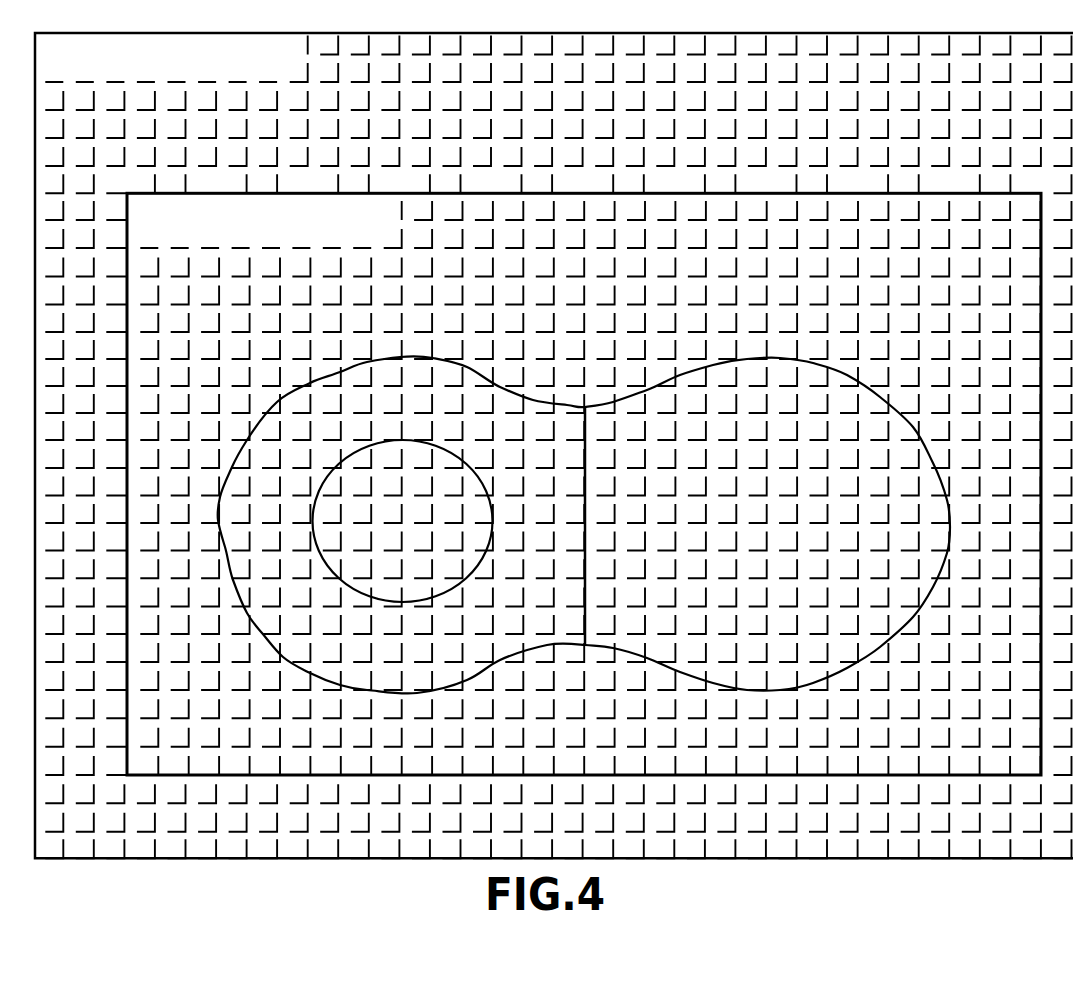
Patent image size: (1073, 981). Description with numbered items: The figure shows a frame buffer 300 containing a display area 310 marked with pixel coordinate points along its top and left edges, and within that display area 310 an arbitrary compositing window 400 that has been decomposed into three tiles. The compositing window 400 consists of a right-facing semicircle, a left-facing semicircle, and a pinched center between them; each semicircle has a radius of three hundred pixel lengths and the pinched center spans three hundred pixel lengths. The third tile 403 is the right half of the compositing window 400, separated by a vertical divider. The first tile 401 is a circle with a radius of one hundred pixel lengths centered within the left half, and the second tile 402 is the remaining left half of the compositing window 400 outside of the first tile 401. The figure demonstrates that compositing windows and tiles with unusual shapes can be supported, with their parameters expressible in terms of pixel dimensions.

The frame buffer 300 is at (247, 70).
The display area 310 is at (340, 233).
The compositing window 400 is at (882, 618).
The tile #1 401 is at (450, 539).
The tile #2 402 is at (450, 650).
The tile #3 403 is at (847, 456).